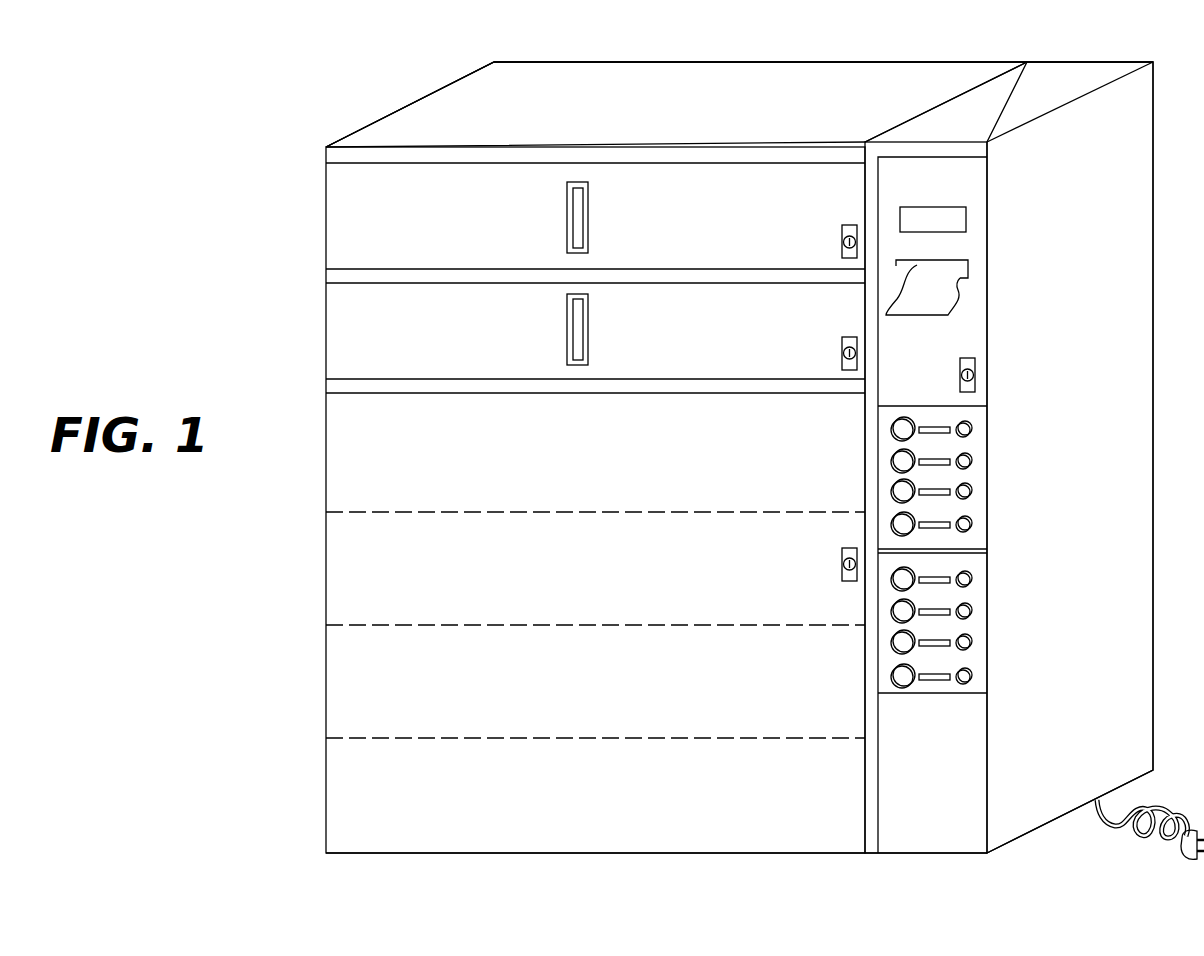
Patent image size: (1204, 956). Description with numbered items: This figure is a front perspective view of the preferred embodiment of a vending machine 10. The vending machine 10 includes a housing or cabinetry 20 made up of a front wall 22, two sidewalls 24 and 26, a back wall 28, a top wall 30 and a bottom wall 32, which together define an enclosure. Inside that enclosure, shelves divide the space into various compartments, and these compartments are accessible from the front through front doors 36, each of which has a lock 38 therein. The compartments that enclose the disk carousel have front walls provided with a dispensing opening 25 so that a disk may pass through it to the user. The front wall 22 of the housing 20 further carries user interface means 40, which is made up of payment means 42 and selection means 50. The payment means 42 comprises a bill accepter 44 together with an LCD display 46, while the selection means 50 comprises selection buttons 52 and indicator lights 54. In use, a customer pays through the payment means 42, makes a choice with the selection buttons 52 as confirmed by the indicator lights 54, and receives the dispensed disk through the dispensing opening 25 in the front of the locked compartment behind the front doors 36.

The vending machine 10 is at (252, 141).
The housing 20 is at (308, 224).
The front wall 22 is at (925, 808).
The sidewall 24 is at (1124, 369).
The dispensing opening 25 is at (567, 215).
The sidewall 26 is at (395, 112).
The back wall 28 is at (690, 62).
The top wall 30 is at (587, 125).
The bottom wall 32 is at (567, 855).
The front door 36 is at (326, 245).
The lock 38 is at (842, 241).
The user interface means 40 is at (994, 421).
The payment means 42 is at (954, 260).
The bill accepter 44 is at (968, 262).
The LCD display 46 is at (920, 207).
The selection means 50 is at (994, 571).
The selection button 52 is at (890, 431).
The indicator light 54 is at (970, 525).